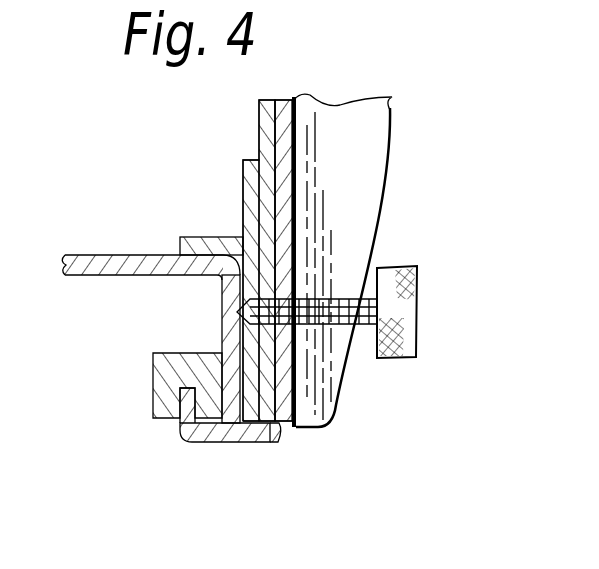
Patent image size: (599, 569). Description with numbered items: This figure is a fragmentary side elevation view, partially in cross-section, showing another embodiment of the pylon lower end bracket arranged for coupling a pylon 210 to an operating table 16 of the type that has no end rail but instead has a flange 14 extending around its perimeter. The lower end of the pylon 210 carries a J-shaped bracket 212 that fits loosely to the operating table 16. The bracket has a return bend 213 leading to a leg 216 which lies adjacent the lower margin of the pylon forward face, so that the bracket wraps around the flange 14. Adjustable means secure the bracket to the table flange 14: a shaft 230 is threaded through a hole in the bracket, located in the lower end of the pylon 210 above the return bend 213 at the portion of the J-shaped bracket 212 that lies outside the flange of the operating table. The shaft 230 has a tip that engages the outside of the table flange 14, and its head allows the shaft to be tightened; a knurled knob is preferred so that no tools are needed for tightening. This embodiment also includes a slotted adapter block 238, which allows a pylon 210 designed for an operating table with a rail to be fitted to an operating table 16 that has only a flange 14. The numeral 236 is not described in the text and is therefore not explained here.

The flange 14 is at (222, 292).
The operating table 16 is at (106, 255).
The pylon 210 is at (367, 133).
The J-shaped bracket 212 is at (273, 443).
The return bend 213 is at (207, 445).
The leg 216 is at (187, 420).
The shaft 230 is at (323, 300).
The screw 236 is at (237, 314).
The slotted adapter block 238 is at (153, 383).